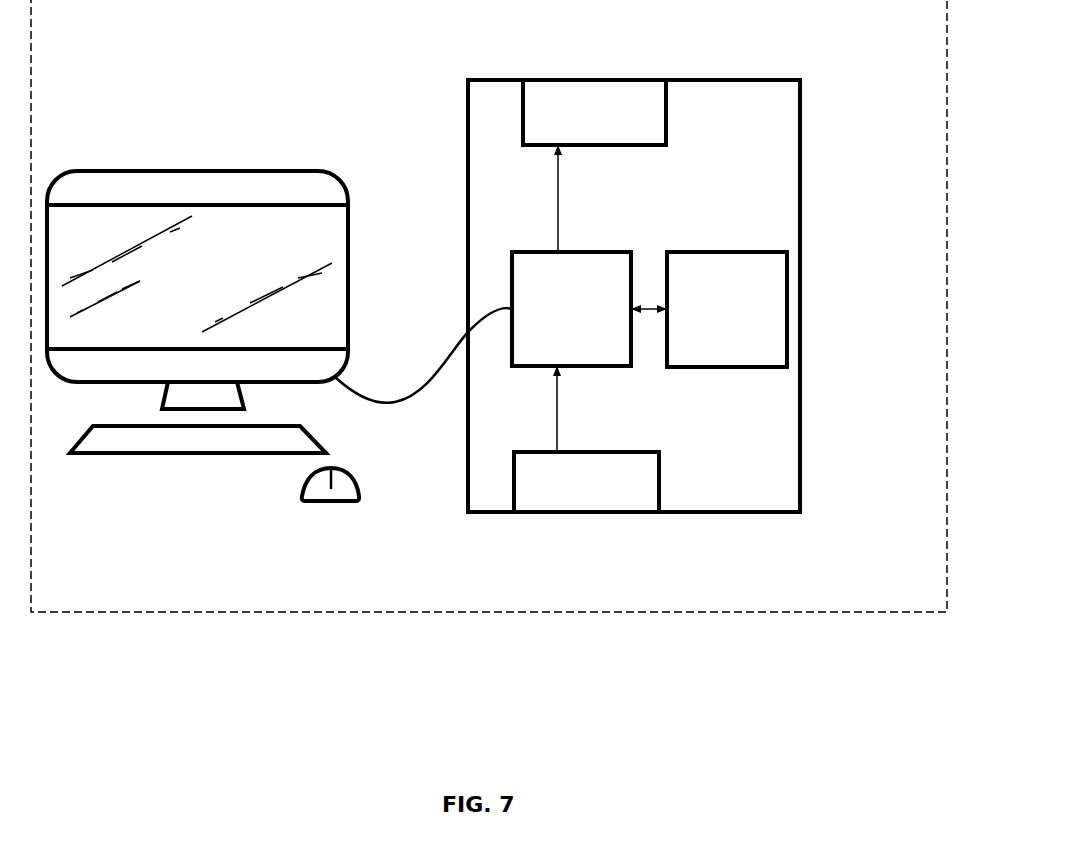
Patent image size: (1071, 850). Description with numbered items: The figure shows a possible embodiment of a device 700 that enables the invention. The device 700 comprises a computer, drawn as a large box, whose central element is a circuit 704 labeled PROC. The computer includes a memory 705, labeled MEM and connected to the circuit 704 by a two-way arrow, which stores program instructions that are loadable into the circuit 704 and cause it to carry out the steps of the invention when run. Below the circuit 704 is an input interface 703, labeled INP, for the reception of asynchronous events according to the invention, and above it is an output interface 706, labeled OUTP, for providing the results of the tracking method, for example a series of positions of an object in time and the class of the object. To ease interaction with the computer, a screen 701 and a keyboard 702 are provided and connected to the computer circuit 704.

The device 700 is at (730, 613).
The screen 701 is at (122, 190).
The keyboard 702 is at (107, 435).
The input interface 703 is at (623, 493).
The circuit 704 is at (596, 272).
The memory 705 is at (766, 342).
The output interface 706 is at (645, 100).